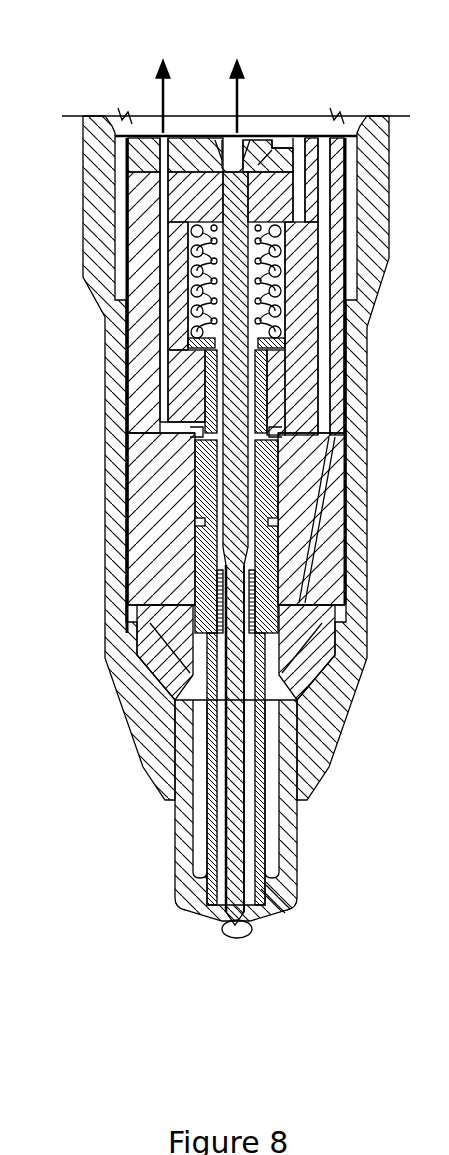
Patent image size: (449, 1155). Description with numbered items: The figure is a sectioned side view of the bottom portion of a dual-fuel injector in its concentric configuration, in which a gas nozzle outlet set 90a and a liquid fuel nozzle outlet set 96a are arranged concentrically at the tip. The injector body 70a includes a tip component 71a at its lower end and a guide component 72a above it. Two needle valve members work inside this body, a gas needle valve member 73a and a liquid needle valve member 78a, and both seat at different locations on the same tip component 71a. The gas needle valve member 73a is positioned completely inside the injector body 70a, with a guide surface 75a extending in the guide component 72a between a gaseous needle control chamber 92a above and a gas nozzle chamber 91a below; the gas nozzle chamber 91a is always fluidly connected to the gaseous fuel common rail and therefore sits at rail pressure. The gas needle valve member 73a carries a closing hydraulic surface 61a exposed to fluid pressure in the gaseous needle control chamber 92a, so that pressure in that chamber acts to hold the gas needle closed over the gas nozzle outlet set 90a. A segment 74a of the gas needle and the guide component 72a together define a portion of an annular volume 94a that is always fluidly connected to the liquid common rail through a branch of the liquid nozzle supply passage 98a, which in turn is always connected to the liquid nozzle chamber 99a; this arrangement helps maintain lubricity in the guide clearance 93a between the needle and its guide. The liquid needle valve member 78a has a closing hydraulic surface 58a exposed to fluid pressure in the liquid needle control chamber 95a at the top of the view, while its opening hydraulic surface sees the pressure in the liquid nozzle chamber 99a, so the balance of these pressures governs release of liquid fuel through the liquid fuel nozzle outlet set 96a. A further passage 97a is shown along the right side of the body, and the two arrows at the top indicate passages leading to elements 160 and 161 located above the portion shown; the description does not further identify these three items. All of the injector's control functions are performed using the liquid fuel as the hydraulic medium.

The to element 161 (fuel return) 161 is at (163, 61).
The to element 160 (fuel supply) 160 is at (237, 61).
The liquid needle control chamber 95a is at (224, 165).
The closing hydraulic surface 58a is at (246, 165).
The liquid nozzle supply passage 98a is at (298, 150).
The fuel channel 97a is at (325, 255).
The injector body 70a is at (369, 362).
The gaseous needle control chamber 92a is at (280, 450).
The guide surface 75a is at (280, 548).
The gas nozzle chamber 91a is at (300, 630).
The liquid needle valve member 78a is at (223, 373).
The closing hydraulic surface 61a is at (193, 432).
The annular volume 94a is at (200, 522).
The guide component 72a is at (125, 500).
The segment 74a is at (208, 547).
The liquid nozzle chamber 99a is at (212, 578).
The guide clearance 93a is at (210, 600).
The gas needle valve member 73a is at (207, 792).
The tip component 71a is at (297, 825).
The gas nozzle outlet set 90a is at (292, 915).
The liquid fuel nozzle outlet set 96a is at (256, 937).